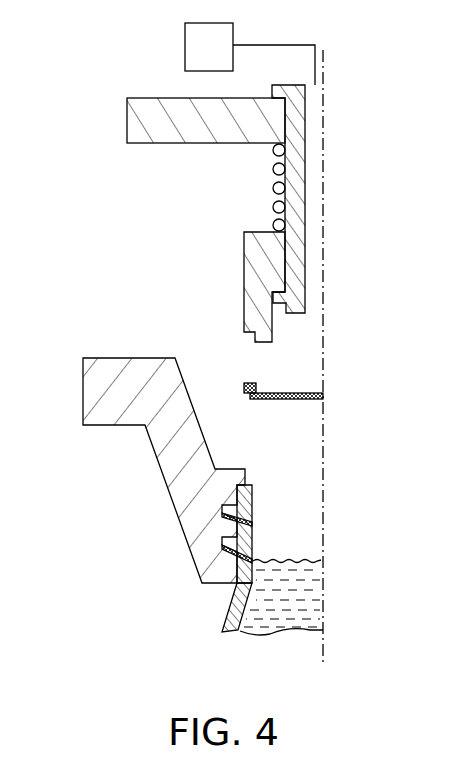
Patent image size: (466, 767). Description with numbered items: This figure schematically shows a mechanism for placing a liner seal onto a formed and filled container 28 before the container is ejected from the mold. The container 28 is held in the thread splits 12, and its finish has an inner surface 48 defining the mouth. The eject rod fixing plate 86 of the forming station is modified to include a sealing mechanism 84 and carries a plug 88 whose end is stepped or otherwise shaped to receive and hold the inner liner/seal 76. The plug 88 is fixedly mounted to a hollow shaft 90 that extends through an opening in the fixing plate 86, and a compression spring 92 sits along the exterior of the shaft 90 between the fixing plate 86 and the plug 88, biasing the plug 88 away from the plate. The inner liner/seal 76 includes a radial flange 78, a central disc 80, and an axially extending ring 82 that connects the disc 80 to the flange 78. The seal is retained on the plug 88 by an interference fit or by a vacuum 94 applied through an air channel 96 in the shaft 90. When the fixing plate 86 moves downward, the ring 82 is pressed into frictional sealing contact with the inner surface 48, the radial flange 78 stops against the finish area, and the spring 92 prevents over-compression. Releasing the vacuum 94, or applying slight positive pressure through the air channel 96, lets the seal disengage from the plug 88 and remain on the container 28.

The thread splits 12 is at (110, 382).
The container 28 is at (220, 616).
The inner surface of the finish 48 is at (253, 520).
The inner liner/seal 76 is at (300, 382).
The radial flange 78 is at (249, 382).
The central disc 80 is at (313, 399).
The axially extending ring 82 is at (252, 399).
The sealing mechanism 84 is at (160, 269).
The eject rod fixing plate 86 is at (145, 120).
The plug 88 is at (272, 258).
The hollow shaft 90 is at (305, 193).
The compression spring 92 is at (272, 170).
The vacuum 94 is at (196, 44).
The air channel 96 is at (313, 228).